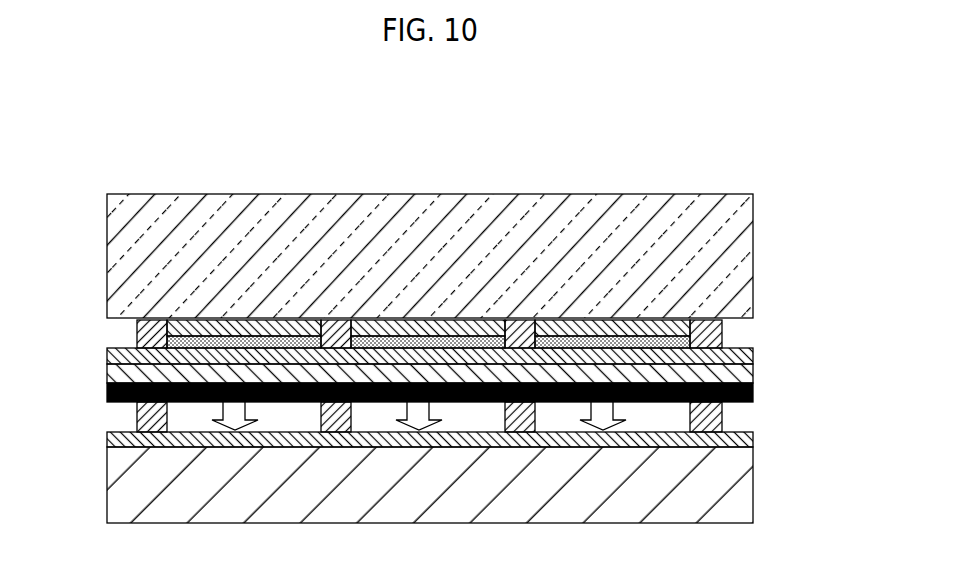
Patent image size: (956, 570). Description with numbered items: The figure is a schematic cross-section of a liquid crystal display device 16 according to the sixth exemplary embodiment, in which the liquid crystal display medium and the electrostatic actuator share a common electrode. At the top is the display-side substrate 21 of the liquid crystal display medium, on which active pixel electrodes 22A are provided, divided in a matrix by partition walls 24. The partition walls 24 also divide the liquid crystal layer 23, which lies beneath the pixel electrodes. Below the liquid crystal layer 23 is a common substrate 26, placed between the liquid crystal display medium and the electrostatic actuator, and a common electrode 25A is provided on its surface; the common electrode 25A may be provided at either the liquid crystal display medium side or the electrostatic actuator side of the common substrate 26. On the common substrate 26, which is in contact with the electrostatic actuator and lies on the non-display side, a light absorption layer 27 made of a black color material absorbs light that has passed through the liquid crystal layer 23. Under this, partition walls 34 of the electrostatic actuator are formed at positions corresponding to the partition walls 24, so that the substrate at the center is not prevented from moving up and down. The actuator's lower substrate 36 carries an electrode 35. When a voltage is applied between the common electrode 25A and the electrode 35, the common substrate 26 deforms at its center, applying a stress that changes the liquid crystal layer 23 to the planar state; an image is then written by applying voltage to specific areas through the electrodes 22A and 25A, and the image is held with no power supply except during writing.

The liquid crystal display device 16 is at (733, 157).
The display-side substrate 21 is at (750, 258).
The active pixel electrodes 22A is at (137, 323).
The liquid crystal layer 23 is at (723, 345).
The partition walls 24 is at (722, 327).
The common electrode 25A is at (109, 352).
The common substrate 26 is at (743, 367).
The light absorption layer 27 is at (747, 390).
The partition walls 34 is at (722, 413).
The electrode 35 is at (748, 439).
The substrate 36 is at (747, 495).